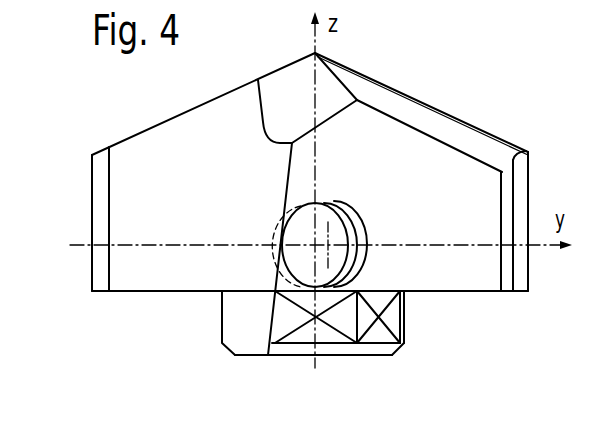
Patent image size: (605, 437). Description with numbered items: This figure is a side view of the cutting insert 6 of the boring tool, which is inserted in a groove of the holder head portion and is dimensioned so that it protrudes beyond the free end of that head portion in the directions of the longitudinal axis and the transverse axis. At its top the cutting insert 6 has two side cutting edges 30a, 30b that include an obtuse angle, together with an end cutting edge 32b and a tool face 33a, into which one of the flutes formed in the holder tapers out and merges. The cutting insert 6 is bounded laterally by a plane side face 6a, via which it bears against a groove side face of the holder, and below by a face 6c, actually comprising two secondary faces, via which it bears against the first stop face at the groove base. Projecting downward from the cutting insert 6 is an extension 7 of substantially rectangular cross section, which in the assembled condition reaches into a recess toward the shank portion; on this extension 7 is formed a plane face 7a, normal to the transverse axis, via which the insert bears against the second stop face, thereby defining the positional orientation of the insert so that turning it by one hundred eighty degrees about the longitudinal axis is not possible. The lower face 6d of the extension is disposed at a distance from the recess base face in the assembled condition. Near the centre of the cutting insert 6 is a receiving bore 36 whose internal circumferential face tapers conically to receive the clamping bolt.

The cutting insert 6 is at (532, 185).
The side face 6a is at (425, 163).
The face 6c is at (478, 300).
The lower face 6d is at (355, 366).
The extension 7 is at (416, 343).
The plane face 7a is at (214, 324).
The side cutting edge 30a is at (437, 105).
The side cutting edge 30b is at (152, 127).
The end cutting edge 32b is at (115, 200).
The tool face 33a is at (157, 157).
The receiving bore 36 is at (337, 252).